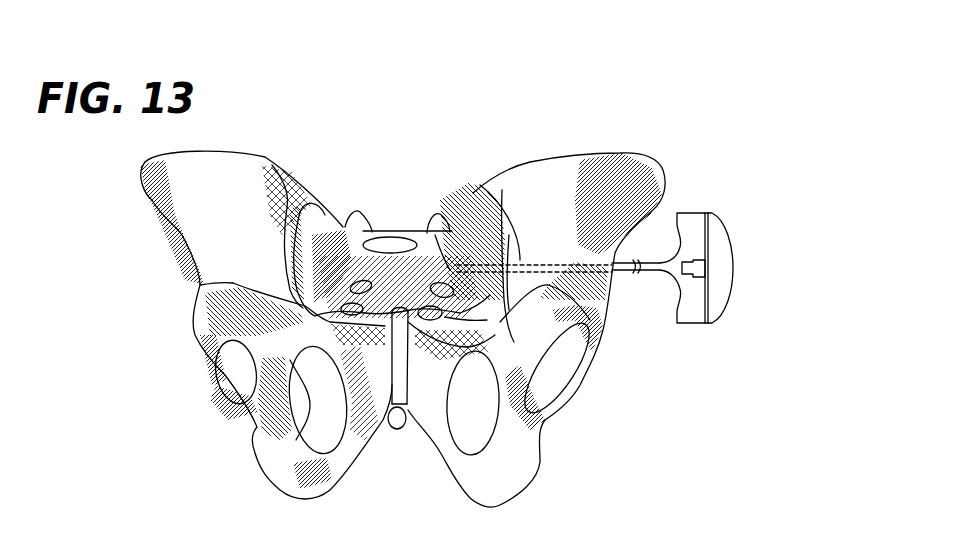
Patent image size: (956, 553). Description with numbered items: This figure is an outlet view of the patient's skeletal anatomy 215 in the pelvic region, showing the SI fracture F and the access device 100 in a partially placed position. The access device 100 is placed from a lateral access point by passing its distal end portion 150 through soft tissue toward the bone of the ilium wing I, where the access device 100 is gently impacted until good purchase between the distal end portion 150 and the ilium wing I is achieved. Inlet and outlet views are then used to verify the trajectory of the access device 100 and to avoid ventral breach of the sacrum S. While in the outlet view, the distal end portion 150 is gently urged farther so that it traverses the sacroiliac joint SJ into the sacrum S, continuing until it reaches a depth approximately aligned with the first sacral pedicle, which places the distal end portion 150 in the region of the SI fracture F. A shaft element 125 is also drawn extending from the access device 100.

The skeletal anatomy 215 is at (641, 207).
The SI fracture F is at (448, 270).
The sacrum S is at (430, 207).
The sacroiliac joint SJ is at (497, 270).
The ilium wing I is at (646, 186).
The access device 100 is at (720, 236).
The guide shaft 125 is at (618, 272).
The distal end portion 150 is at (450, 272).